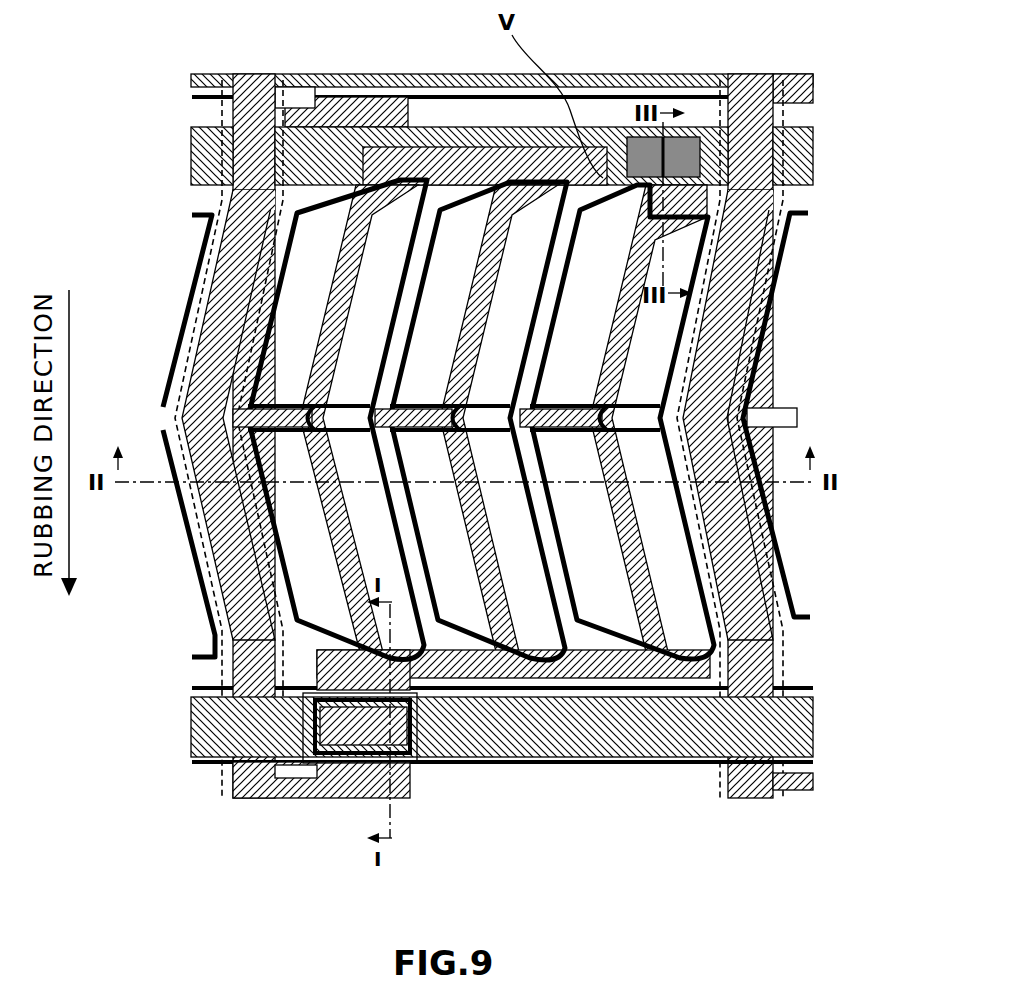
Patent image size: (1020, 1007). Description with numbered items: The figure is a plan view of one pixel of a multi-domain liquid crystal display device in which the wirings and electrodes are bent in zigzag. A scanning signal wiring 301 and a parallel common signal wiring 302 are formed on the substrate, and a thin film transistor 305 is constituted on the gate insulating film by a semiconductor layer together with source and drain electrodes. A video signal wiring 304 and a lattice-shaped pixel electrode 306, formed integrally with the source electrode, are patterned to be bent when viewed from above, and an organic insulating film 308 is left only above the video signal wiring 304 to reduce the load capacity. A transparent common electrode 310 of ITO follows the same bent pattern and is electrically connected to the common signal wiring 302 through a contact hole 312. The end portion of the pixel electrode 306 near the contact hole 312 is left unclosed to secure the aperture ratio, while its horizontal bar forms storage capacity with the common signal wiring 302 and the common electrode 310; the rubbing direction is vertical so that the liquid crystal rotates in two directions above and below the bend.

The scanning signal wiring 301 is at (205, 726).
The common signal wiring 302 is at (195, 148).
The video signal wiring 304 is at (242, 780).
The thin film transistor 305 is at (410, 752).
The pixel electrode 306 is at (848, 535).
The insulating film 308 is at (215, 689).
The common electrode 310 is at (750, 302).
The contact hole 312 is at (673, 162).